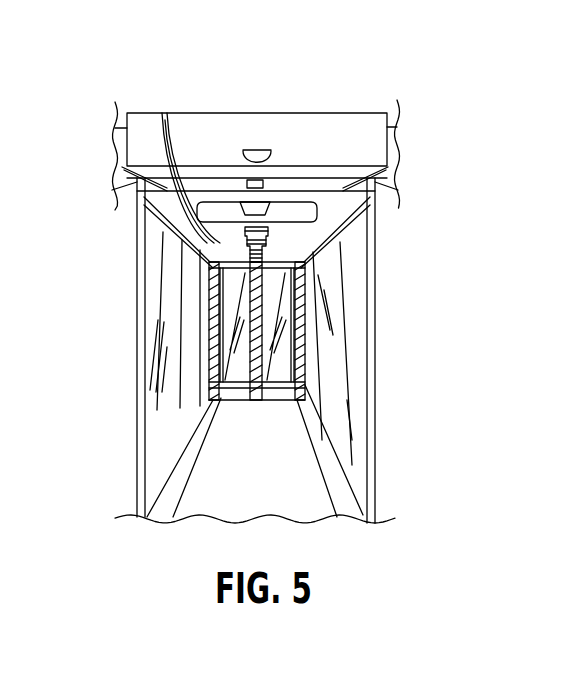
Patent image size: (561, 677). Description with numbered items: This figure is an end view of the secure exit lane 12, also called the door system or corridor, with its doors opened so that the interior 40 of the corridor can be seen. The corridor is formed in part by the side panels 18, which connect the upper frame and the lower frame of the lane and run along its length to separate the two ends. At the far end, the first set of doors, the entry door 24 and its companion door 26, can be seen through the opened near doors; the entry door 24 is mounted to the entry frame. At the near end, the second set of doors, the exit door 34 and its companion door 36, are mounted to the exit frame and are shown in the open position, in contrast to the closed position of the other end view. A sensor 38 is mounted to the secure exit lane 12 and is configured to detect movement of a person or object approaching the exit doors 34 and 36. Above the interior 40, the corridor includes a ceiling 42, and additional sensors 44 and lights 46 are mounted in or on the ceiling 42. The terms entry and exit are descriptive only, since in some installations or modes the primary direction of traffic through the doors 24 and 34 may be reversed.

The secure exit lane 12 is at (175, 77).
The side panels 18 is at (170, 413).
The entry door 24 is at (283, 337).
The first set door 26 is at (233, 300).
The exit door 34 is at (380, 318).
The second set door 36 is at (130, 468).
The sensor 38 is at (257, 150).
The interior 40 is at (262, 472).
The ceiling 42 is at (323, 200).
The additional sensors 44 is at (247, 183).
The lights 46 is at (164, 113).